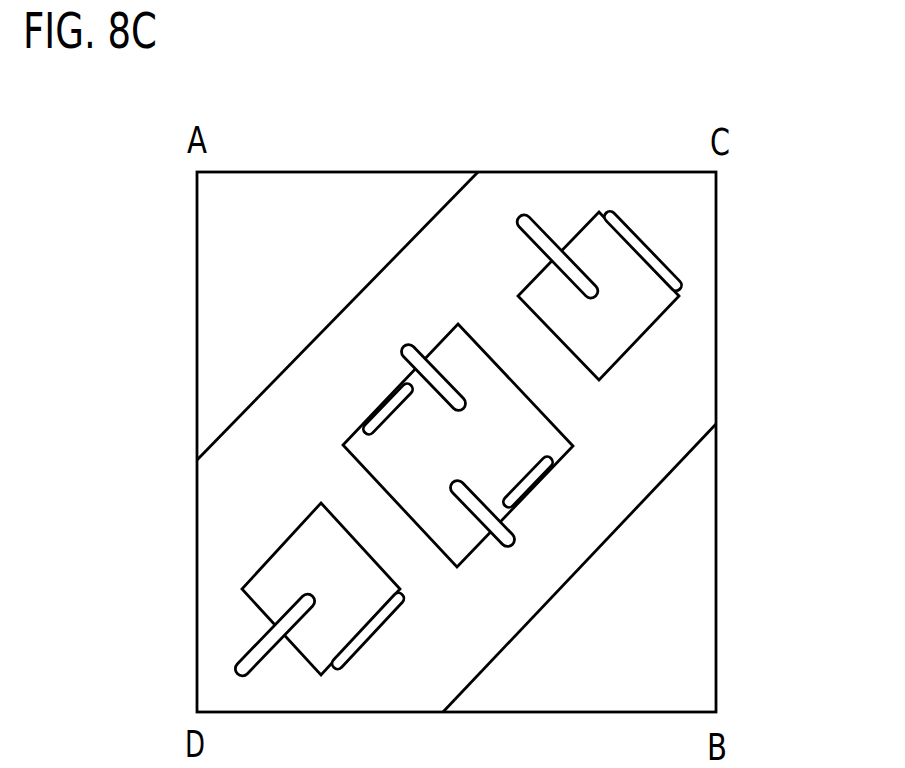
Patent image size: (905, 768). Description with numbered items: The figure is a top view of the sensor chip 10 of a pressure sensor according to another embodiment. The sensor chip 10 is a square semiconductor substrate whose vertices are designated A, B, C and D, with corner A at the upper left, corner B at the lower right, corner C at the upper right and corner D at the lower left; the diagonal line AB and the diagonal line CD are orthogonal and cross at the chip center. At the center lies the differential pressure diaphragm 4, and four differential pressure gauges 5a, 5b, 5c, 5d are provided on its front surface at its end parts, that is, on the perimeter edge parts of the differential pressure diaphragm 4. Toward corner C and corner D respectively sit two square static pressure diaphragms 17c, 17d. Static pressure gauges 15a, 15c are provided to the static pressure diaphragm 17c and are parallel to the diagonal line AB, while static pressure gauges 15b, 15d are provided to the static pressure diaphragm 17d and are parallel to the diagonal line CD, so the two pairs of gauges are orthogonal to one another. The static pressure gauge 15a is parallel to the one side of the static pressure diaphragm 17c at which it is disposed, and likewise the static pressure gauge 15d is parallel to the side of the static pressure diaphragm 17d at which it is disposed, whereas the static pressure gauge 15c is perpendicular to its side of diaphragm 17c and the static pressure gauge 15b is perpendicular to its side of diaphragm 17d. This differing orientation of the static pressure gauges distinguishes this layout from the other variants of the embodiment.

The sensor chip 10 is at (353, 172).
The differential pressure diaphragm 4 is at (350, 452).
The differential pressure gauge 5a is at (413, 348).
The differential pressure gauge 5b is at (510, 540).
The differential pressure gauge 5c is at (390, 410).
The differential pressure gauge 5d is at (556, 472).
The static pressure diaphragm 17c is at (596, 237).
The static pressure diaphragm 17d is at (268, 573).
The static pressure gauge 15a is at (681, 281).
The static pressure gauge 15b is at (237, 664).
The static pressure gauge 15c is at (533, 233).
The static pressure gauge 15d is at (343, 667).